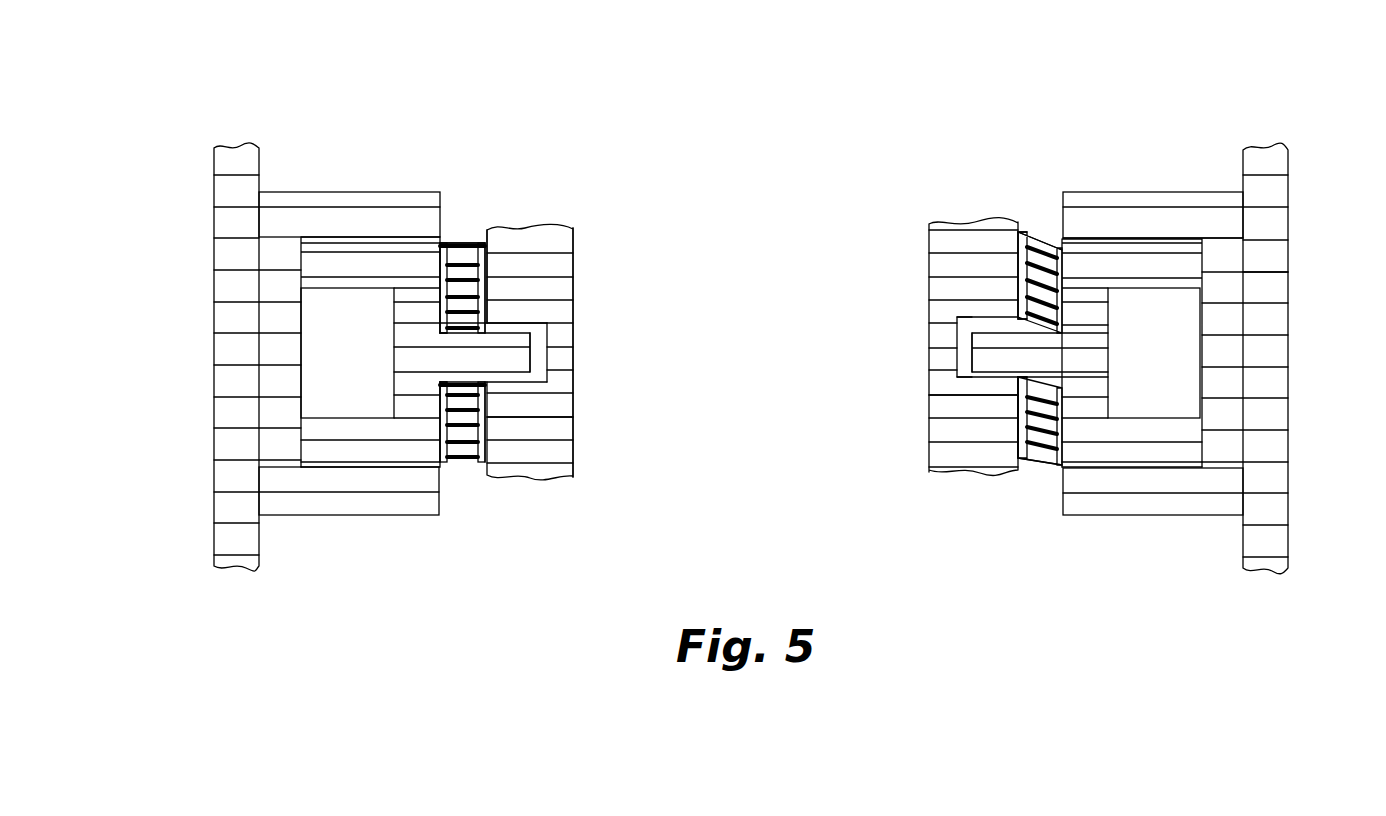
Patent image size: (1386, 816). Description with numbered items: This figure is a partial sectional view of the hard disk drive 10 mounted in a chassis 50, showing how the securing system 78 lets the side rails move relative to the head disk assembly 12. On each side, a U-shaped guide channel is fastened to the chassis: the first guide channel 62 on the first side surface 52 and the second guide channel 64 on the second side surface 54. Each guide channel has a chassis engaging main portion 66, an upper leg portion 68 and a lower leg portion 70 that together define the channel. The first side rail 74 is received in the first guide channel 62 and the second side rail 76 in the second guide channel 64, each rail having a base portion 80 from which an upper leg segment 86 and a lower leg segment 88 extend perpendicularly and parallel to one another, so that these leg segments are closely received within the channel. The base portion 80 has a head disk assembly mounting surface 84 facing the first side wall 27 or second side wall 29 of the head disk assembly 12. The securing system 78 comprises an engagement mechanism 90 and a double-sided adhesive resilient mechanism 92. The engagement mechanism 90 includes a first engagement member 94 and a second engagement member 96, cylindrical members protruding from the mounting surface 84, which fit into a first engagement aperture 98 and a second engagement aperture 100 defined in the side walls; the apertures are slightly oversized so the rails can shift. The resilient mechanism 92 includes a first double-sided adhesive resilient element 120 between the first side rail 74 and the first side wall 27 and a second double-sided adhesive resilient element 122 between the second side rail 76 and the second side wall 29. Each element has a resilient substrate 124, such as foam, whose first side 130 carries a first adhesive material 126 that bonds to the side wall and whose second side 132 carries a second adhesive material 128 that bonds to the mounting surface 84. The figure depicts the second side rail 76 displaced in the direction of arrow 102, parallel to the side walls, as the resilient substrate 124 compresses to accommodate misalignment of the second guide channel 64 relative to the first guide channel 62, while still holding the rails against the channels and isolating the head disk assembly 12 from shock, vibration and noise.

The hard disk drive 10 is at (606, 151).
The head disk assembly 12 is at (579, 247).
The first side wall 27 is at (563, 423).
The second side wall 29 is at (938, 407).
The chassis 50 is at (1291, 178).
The first side surface 52 is at (222, 272).
The second side surface 54 is at (1278, 278).
The first guide channel 62 is at (378, 190).
The second guide channel 64 is at (1124, 190).
The chassis engaging main portion 66 is at (268, 362).
The upper leg portion 68 is at (298, 200).
The lower leg portion 70 is at (413, 505).
The first side rail 74 is at (330, 461).
The second side rail 76 is at (1170, 469).
The securing system 78 is at (513, 186).
The base portion 80 is at (403, 365).
The head disk assembly mounting surface 84 is at (467, 455).
The upper leg segment 86 is at (356, 282).
The lower leg segment 88 is at (362, 448).
The engagement mechanism 90 is at (543, 337).
The double-sided adhesive resilient mechanism 92 is at (460, 237).
The first engagement member 94 is at (510, 342).
The second engagement member 96 is at (978, 378).
The first engagement aperture 98 is at (538, 383).
The second engagement aperture 100 is at (957, 322).
The arrow indicating first direction 102 is at (1178, 236).
The first double-sided adhesive resilient element 120 is at (470, 247).
The second double-sided adhesive resilient element 122 is at (1030, 475).
The resilient substrate 124 is at (448, 442).
The first adhesive material 126 is at (490, 258).
The second adhesive material 128 is at (445, 407).
The first side 130 is at (482, 438).
The second side 132 is at (423, 250).